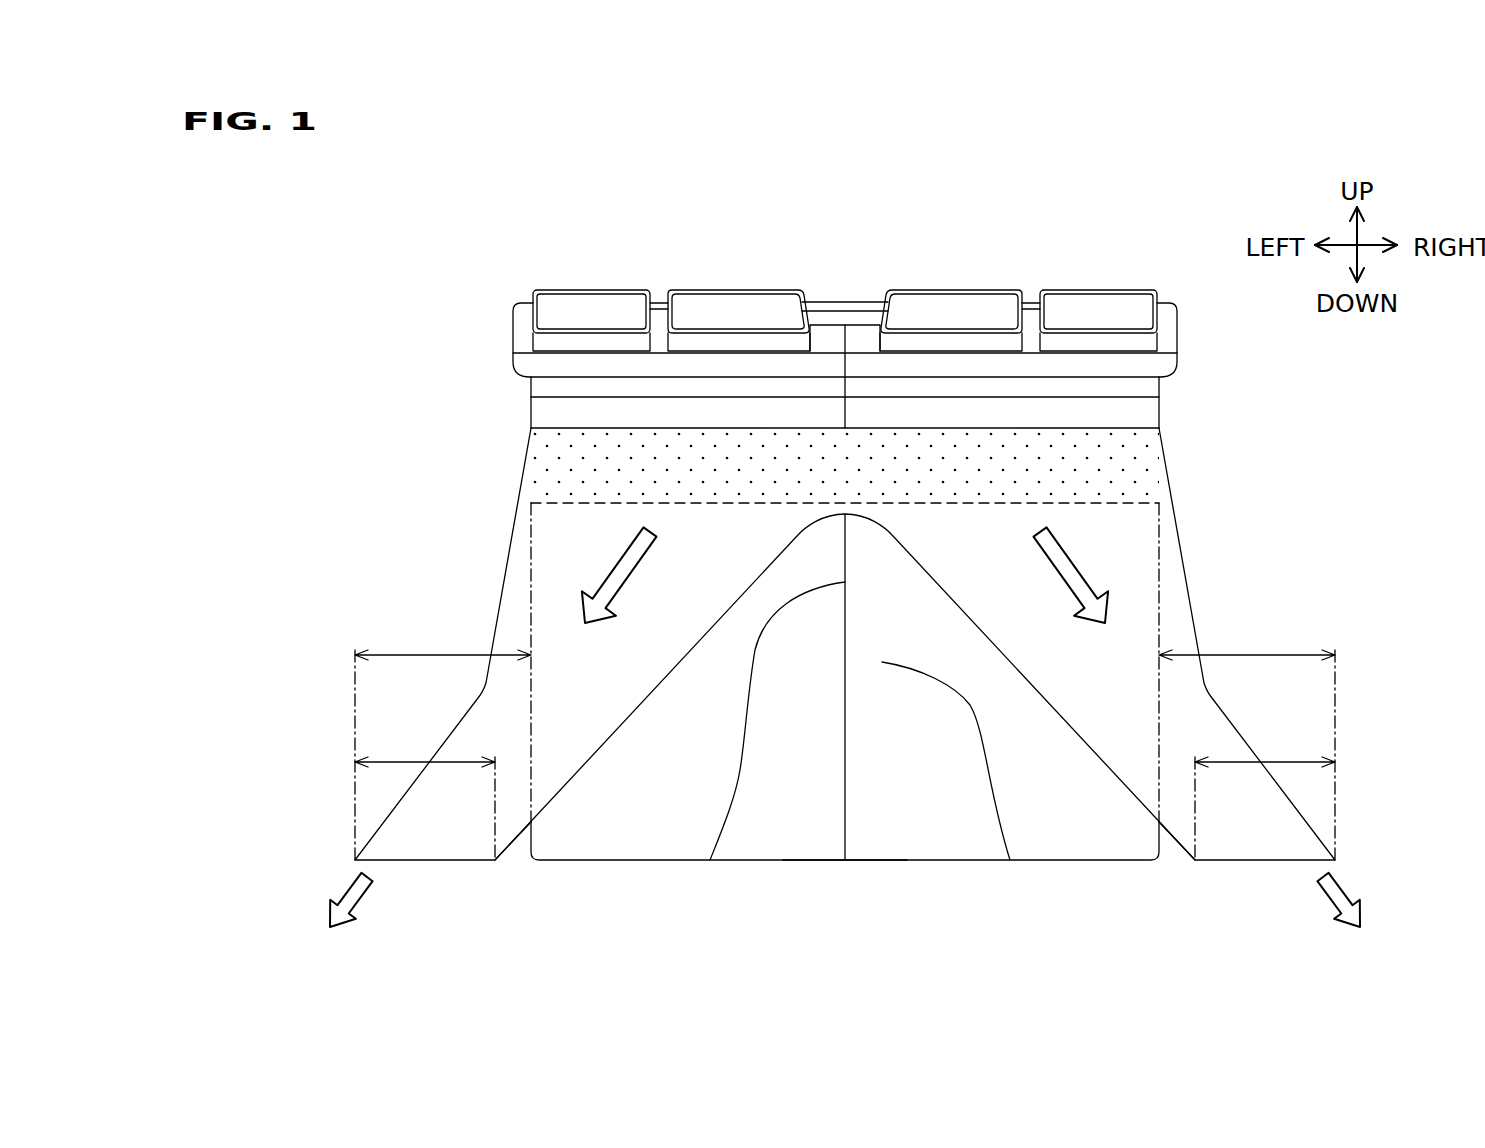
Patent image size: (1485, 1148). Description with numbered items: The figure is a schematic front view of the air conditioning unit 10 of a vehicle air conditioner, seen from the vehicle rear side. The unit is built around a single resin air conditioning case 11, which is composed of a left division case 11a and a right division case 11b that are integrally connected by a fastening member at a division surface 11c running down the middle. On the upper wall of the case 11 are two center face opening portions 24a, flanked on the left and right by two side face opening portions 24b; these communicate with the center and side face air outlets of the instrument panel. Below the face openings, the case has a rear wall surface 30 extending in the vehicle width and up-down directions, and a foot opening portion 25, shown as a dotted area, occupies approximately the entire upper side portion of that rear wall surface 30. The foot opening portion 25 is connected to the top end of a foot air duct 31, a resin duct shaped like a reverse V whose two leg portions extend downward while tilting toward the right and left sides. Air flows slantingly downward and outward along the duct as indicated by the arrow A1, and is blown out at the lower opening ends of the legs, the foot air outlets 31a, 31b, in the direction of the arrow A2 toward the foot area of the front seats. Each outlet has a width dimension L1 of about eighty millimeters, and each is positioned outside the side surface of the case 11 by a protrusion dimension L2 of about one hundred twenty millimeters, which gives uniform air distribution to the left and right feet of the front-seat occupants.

The air conditioning unit 10 is at (852, 281).
The air conditioning case 11 is at (859, 769).
The left division case 11a is at (793, 861).
The right division case 11b is at (883, 889).
The division surface 11c is at (710, 861).
The center face opening portion 24a is at (726, 307).
The side face opening portion 24b is at (595, 307).
The foot opening portion 25 is at (575, 456).
The rear wall surface 30 is at (1010, 861).
The foot air duct 31 is at (845, 673).
The foot air outlet 31a is at (437, 861).
The foot air outlet 31b is at (1248, 861).
The arrow A1 is at (603, 571).
The arrow A2 is at (347, 880).
The dimension L1 is at (845, 797).
The dimension L2 is at (845, 743).